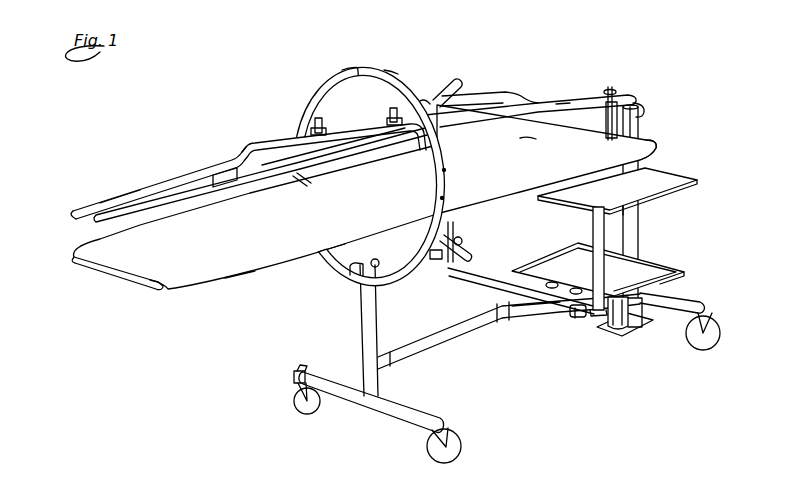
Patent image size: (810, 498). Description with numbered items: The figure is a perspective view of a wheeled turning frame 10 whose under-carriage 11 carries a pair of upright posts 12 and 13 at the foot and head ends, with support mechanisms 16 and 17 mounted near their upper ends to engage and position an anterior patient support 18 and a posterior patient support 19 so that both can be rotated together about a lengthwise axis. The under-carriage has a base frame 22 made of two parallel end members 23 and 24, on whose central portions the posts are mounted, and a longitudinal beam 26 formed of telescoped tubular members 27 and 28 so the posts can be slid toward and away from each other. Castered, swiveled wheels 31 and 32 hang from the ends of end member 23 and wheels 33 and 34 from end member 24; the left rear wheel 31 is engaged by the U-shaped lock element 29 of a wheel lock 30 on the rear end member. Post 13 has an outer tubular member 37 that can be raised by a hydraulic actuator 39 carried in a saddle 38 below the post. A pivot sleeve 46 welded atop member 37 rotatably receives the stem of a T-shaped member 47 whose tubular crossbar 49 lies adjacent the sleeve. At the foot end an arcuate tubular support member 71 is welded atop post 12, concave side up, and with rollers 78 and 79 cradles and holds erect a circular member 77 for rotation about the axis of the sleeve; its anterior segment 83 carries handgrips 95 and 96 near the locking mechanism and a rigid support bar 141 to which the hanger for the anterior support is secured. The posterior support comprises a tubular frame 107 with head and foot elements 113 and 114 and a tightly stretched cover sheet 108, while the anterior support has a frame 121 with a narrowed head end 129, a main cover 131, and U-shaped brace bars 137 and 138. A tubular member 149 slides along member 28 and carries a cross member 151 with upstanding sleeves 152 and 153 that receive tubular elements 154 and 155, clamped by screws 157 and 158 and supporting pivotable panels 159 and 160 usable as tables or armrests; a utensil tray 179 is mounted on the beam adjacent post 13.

The turning frame 10 is at (110, 313).
The under-carriage 11 is at (341, 428).
The post 12 is at (359, 319).
The post 13 is at (645, 223).
The support mechanism 16 is at (322, 64).
The support mechanism 17 is at (624, 91).
The anterior patient support 18 is at (173, 178).
The posterior patient support 19 is at (238, 282).
The base frame 22 is at (447, 340).
The end member 23 is at (401, 425).
The end member 24 is at (702, 300).
The longitudinal beam 26 is at (512, 326).
The tubular member 27 is at (388, 352).
The tubular member 28 is at (510, 335).
The U-shaped lock element 29 is at (308, 368).
The wheel lock 30 is at (292, 375).
The wheel 31 is at (300, 400).
The wheel 32 is at (434, 463).
The wheel 33 is at (575, 322).
The wheel 34 is at (706, 350).
The outer tubular member 37 is at (641, 210).
The saddle 38 is at (642, 330).
The actuator 39 is at (620, 330).
The pivot sleeve 46 is at (640, 110).
The T-shaped member 47 is at (600, 113).
The tubular crossbar 49 is at (608, 124).
The arcuate tubular support member 71 is at (333, 262).
The circular member 77 is at (393, 71).
The roller 78 is at (380, 258).
The roller 79 is at (352, 278).
The anterior segment 83 is at (362, 68).
The handgrip 95 is at (456, 80).
The handgrip 96 is at (471, 258).
The frame 107 is at (110, 281).
The cover sheet 108 is at (365, 197).
The head element 113 is at (656, 148).
The foot element 114 is at (135, 283).
The frame 121 is at (131, 191).
The head end 129 is at (562, 108).
The main cover 131 is at (205, 172).
The brace bar 137 is at (492, 92).
The brace bar 138 is at (256, 143).
The support bar 141 is at (338, 130).
The tubular member 149 is at (527, 310).
The cross member 151 is at (452, 284).
The sleeve 152 is at (446, 276).
The sleeve 153 is at (598, 318).
The tubular element 154 is at (458, 225).
The tubular element 155 is at (594, 228).
The clamp screw 157 is at (464, 240).
The clamp screw 158 is at (562, 264).
The panel 159 is at (522, 142).
The panel 160 is at (676, 179).
The utensil tray 179 is at (686, 262).